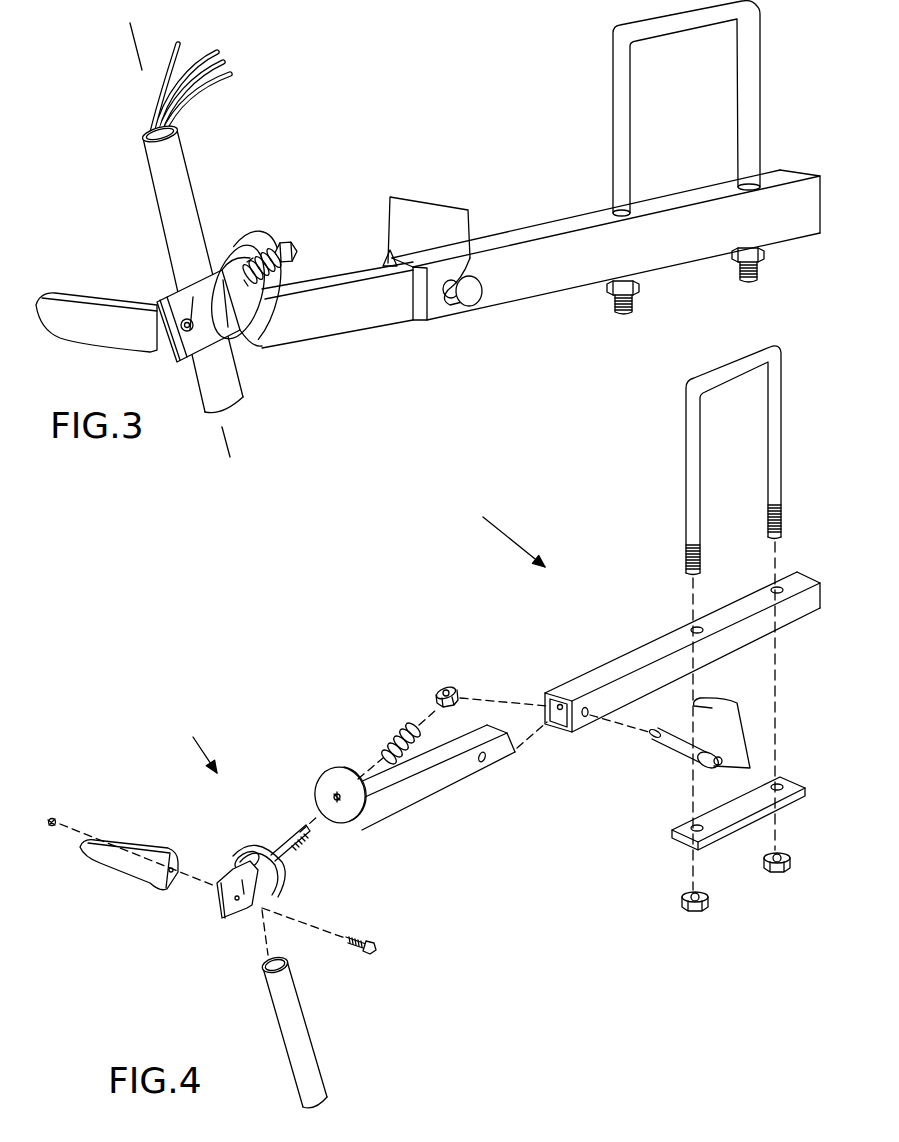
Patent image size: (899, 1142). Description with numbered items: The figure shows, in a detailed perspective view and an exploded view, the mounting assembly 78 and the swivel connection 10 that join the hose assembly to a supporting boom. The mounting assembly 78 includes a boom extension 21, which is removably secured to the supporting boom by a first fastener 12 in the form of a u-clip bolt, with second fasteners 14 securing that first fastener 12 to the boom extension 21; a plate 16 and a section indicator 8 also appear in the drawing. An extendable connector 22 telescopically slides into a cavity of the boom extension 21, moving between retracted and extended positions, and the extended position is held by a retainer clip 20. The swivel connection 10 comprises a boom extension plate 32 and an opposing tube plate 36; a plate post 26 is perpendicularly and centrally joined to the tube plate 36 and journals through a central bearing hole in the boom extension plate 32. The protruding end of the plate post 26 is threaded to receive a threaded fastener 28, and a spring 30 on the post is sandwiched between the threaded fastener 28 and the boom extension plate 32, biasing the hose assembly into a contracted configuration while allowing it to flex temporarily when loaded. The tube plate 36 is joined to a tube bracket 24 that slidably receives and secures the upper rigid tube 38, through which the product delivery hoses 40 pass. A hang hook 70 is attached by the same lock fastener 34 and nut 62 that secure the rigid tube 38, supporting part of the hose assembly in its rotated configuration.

In FIG. 3, the section line 8- 8 is at (130, 23).
In FIG. 4, the swivel connection 10 is at (197, 740).
In FIG. 3, the first fastener 12 is at (613, 127).
In FIG. 4, the first fastener 12 is at (693, 495).
In FIG. 3, the second fasteners 14 is at (636, 280).
In FIG. 4, the second fasteners 14 is at (694, 913).
In FIG. 4, the mounting plate 16 is at (713, 838).
In FIG. 3, the retainer clip 20 is at (437, 203).
In FIG. 4, the retainer clip 20 is at (677, 753).
In FIG. 3, the boom extension 21 is at (548, 263).
In FIG. 3, the extendable connector 22 is at (327, 322).
In FIG. 4, the extendable connector 22 is at (400, 803).
In FIG. 4, the tube bracket 24 is at (238, 917).
In FIG. 3, the plate post 26 is at (289, 252).
In FIG. 4, the plate post 26 is at (285, 850).
In FIG. 3, the threaded fastener 28 is at (262, 243).
In FIG. 4, the threaded fastener 28 is at (460, 700).
In FIG. 3, the spring 30 is at (250, 247).
In FIG. 4, the spring 30 is at (393, 730).
In FIG. 3, the boom extension plate 32 is at (272, 312).
In FIG. 4, the boom extension plate 32 is at (323, 767).
In FIG. 3, the lock fastener 34 is at (188, 332).
In FIG. 4, the lock fastener 34 is at (370, 950).
In FIG. 3, the tube plate 36 is at (250, 347).
In FIG. 4, the tube plate 36 is at (283, 883).
In FIG. 3, the upper rigid tube 38 is at (164, 228).
In FIG. 4, the upper rigid tube 38 is at (302, 1045).
In FIG. 3, the product delivery hoses 40 is at (162, 77).
In FIG. 4, the nut 62 is at (52, 816).
In FIG. 3, the hang hook 70 is at (107, 332).
In FIG. 4, the hang hook 70 is at (127, 867).
In FIG. 4, the mounting assembly 78 is at (496, 529).